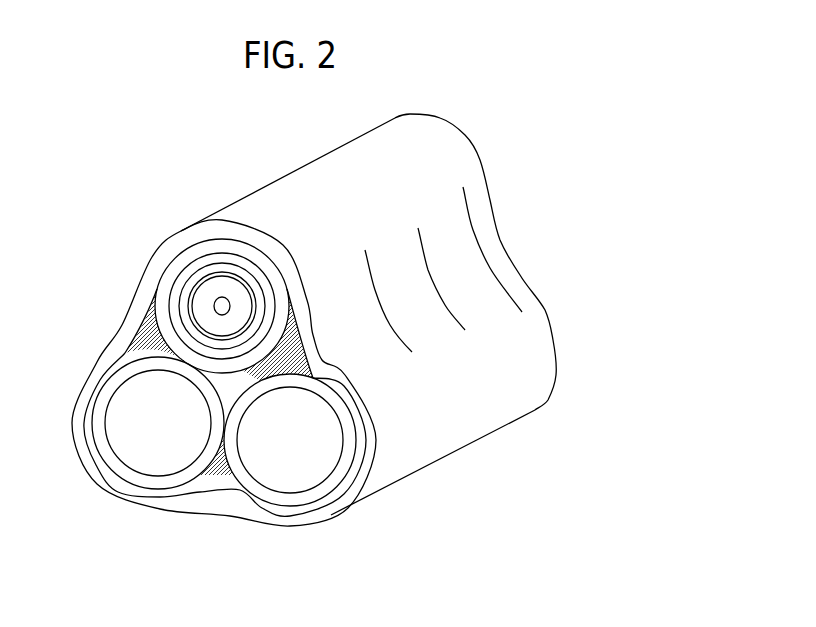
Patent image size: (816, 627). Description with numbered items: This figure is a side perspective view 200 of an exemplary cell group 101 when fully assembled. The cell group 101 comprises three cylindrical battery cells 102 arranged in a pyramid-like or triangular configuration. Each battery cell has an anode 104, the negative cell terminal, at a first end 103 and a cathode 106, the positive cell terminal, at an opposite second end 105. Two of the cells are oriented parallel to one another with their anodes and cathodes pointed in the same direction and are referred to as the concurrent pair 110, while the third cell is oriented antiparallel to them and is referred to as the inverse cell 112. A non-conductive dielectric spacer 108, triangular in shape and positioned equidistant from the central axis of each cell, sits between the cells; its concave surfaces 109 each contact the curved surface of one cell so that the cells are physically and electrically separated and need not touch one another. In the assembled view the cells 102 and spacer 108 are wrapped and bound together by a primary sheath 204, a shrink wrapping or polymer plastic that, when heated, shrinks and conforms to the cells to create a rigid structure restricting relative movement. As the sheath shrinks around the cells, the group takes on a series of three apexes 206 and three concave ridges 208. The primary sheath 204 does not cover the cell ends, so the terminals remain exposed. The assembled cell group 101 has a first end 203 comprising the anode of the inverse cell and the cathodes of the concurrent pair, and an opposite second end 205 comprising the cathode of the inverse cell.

The side perspective view 200 is at (521, 87).
The cell group 101 is at (225, 155).
The battery cells 102 is at (151, 337).
The first end 103 is at (248, 317).
The anode 104 is at (192, 270).
The second end 105 is at (119, 400).
The cathode 106 is at (104, 437).
The spacer 108 is at (257, 372).
The concave surfaces 109 is at (209, 393).
The concurrent pair 110 is at (214, 508).
The inverse cell 112 is at (203, 235).
The first end 203 is at (169, 528).
The primary sheath 204 is at (380, 490).
The second end 205 is at (525, 208).
The apexes 206 is at (324, 157).
The concave ridges 208 is at (415, 306).